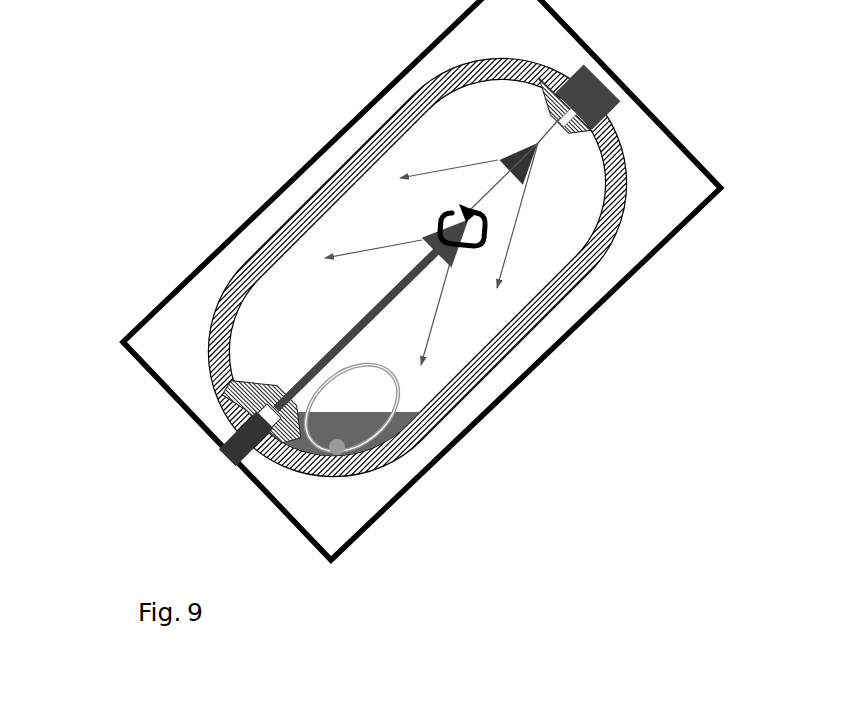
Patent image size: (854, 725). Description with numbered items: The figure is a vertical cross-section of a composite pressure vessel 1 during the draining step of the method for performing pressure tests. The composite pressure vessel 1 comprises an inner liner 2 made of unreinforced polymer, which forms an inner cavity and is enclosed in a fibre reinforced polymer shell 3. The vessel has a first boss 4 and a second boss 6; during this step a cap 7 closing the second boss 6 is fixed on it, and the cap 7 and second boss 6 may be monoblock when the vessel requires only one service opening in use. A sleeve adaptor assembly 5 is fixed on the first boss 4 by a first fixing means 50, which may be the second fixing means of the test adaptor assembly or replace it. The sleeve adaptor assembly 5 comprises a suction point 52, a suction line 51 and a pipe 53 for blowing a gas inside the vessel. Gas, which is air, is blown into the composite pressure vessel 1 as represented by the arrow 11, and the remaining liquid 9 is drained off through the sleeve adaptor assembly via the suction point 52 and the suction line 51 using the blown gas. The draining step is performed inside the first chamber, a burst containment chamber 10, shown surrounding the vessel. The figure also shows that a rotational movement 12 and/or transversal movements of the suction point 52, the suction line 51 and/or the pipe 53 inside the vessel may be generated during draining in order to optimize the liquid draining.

The composite pressure vessel 1 is at (395, 284).
The inner liner 2 is at (435, 123).
The fibre reinforced polymer shell 3 is at (622, 230).
The first boss 4 is at (154, 469).
The sleeve adaptor assembly 5 is at (222, 448).
The second boss 6 is at (590, 133).
The cap 7 is at (606, 86).
The remaining liquid 9 is at (364, 428).
The burst containment chamber 10 is at (395, 67).
The arrow representing gas blown inside the vessel 11 is at (382, 291).
The rotational movement 12 is at (473, 254).
The first fixing means 50 is at (223, 427).
The suction line 51 is at (378, 366).
The suction point 52 is at (328, 437).
The pipe 53 is at (273, 406).